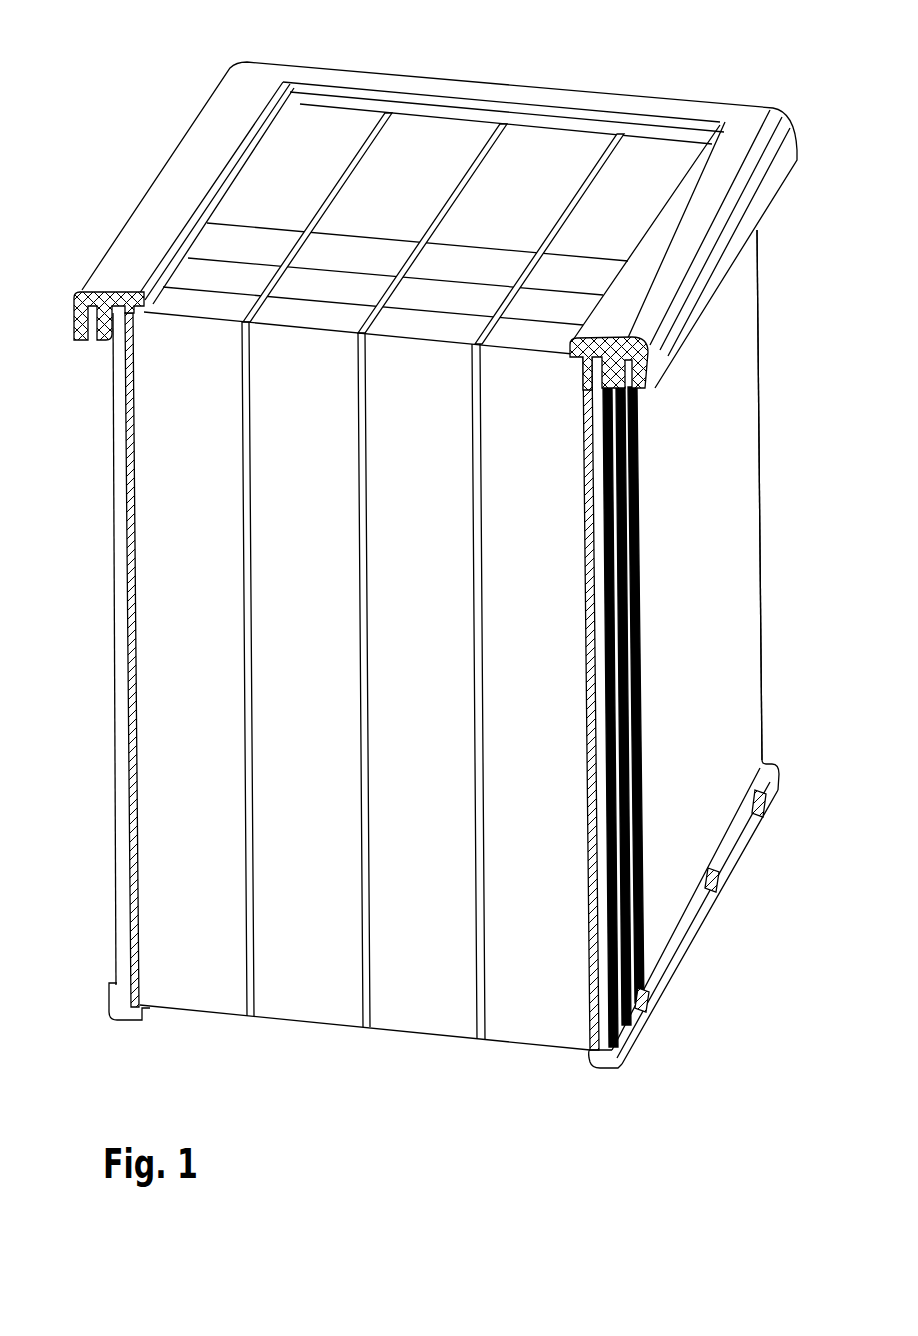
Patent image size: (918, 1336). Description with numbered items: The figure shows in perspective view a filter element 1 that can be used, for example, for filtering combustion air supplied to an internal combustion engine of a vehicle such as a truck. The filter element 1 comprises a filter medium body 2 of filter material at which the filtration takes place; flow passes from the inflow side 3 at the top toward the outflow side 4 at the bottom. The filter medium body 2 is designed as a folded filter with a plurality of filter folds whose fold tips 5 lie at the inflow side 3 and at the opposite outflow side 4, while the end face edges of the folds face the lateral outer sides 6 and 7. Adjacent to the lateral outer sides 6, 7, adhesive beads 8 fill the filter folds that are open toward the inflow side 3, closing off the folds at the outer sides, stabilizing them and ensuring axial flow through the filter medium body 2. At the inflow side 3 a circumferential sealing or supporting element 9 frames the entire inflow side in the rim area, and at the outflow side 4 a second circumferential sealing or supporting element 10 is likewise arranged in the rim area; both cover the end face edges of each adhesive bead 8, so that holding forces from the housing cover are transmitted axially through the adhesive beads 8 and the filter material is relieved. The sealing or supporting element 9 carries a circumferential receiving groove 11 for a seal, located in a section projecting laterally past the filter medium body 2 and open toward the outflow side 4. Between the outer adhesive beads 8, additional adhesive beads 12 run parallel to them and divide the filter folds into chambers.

The filter element 1 is at (136, 74).
The filter medium body 2 is at (417, 134).
The inflow side 3 is at (536, 152).
The outflow side 4 is at (311, 1030).
The fold tips 5 is at (467, 278).
The lateral outer side 6 is at (750, 640).
The lateral outer side 7 is at (116, 664).
The adhesive bead 8 is at (136, 453).
The sealing or supporting element 9 is at (758, 120).
The sealing or supporting element 10 is at (767, 793).
The receiving groove 11 is at (91, 338).
The adhesive bead 12 is at (357, 612).